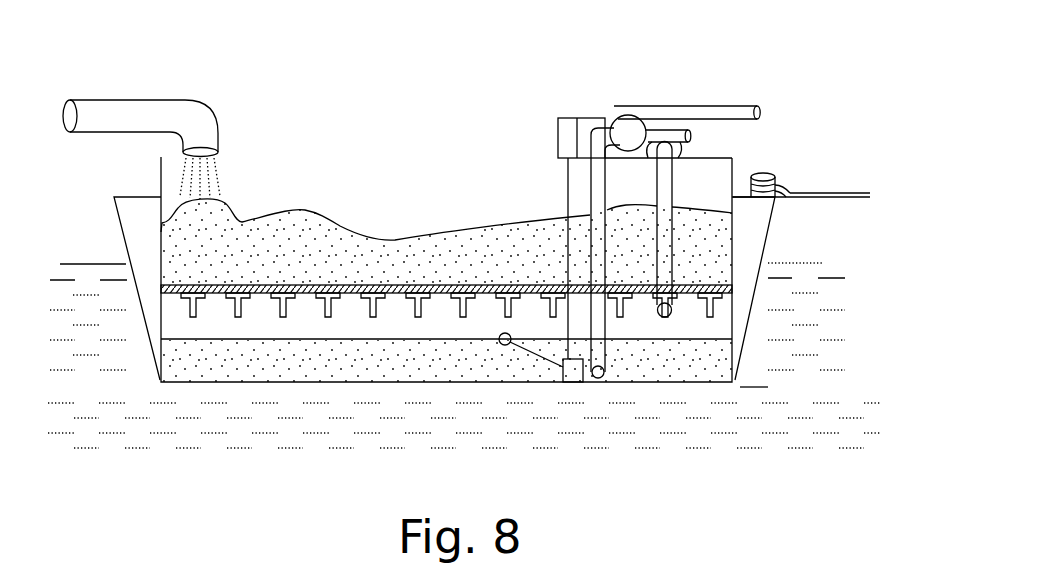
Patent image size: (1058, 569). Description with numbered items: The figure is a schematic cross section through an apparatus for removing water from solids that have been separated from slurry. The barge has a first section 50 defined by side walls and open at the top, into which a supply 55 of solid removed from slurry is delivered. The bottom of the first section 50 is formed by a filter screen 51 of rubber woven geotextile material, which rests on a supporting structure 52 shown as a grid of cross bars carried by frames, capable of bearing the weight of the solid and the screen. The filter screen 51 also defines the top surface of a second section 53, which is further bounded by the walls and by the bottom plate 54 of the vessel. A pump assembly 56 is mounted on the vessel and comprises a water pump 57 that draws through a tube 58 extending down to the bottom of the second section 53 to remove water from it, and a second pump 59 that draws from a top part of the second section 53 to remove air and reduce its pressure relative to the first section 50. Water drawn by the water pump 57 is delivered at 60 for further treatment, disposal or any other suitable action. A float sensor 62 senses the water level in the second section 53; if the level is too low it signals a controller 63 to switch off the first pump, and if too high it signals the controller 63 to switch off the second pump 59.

The first section 50 is at (328, 207).
The filter screen 51 is at (173, 290).
The structure 52 is at (240, 318).
The second section 53 is at (400, 325).
The bottom plate 54 is at (313, 390).
The supply 55 is at (173, 112).
The pump assembly 56 is at (688, 42).
The water pump 57 is at (622, 123).
The tube 58 is at (602, 375).
The second pump 59 is at (677, 145).
The delivery point 60 is at (667, 242).
The float sensor 62 is at (577, 373).
The controller 63 is at (565, 132).